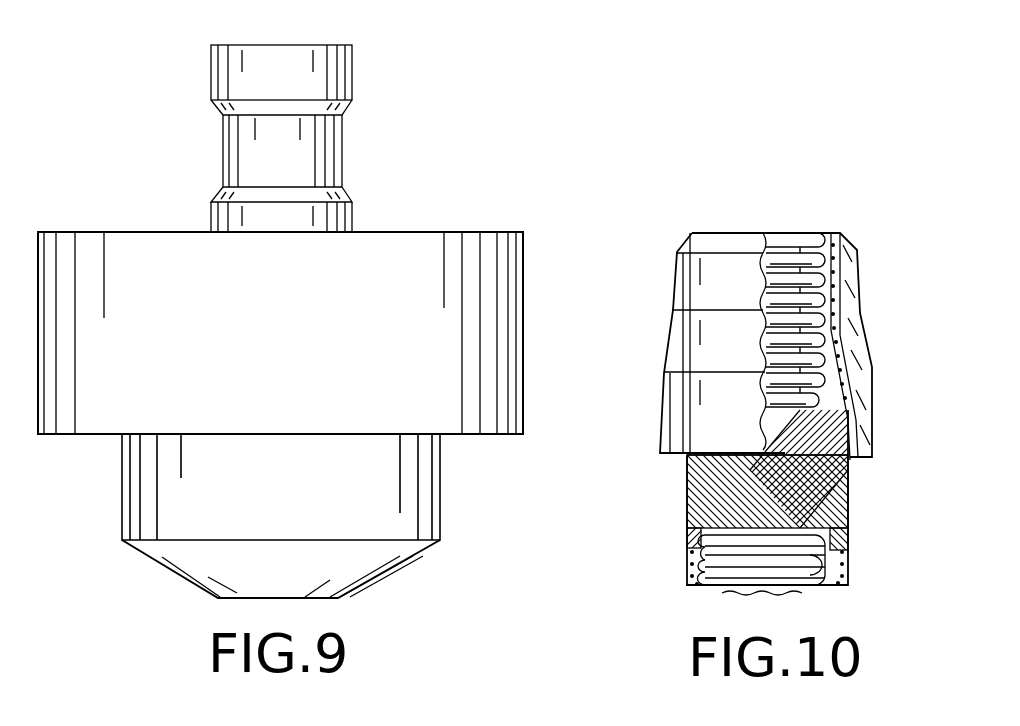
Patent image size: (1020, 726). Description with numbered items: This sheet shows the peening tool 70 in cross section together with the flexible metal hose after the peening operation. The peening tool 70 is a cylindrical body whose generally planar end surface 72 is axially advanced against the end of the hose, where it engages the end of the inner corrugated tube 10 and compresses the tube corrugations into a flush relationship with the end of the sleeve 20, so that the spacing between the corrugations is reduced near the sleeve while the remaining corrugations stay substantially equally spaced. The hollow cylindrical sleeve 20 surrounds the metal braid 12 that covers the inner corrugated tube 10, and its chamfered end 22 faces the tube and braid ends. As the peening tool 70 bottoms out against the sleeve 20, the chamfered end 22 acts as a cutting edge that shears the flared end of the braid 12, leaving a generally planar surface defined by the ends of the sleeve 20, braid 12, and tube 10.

In FIG. 9, the peening tool 70 is at (415, 249).
In FIG. 9, the generally planar end surface 72 is at (336, 600).
In FIG. 10, the chamfered end 22 is at (690, 236).
In FIG. 10, the sleeve 20 is at (720, 267).
In FIG. 10, the metal braid 12 is at (695, 511).
In FIG. 10, the inner corrugated tube 10 is at (731, 578).